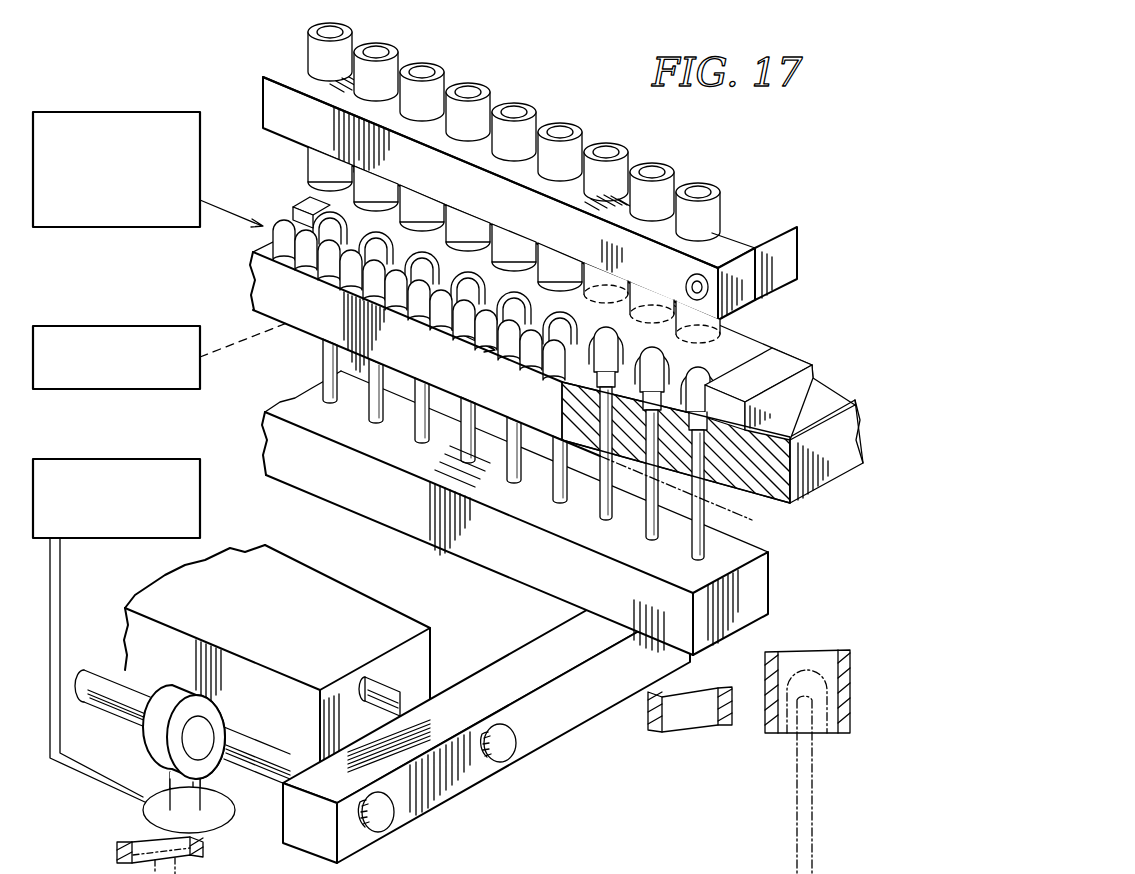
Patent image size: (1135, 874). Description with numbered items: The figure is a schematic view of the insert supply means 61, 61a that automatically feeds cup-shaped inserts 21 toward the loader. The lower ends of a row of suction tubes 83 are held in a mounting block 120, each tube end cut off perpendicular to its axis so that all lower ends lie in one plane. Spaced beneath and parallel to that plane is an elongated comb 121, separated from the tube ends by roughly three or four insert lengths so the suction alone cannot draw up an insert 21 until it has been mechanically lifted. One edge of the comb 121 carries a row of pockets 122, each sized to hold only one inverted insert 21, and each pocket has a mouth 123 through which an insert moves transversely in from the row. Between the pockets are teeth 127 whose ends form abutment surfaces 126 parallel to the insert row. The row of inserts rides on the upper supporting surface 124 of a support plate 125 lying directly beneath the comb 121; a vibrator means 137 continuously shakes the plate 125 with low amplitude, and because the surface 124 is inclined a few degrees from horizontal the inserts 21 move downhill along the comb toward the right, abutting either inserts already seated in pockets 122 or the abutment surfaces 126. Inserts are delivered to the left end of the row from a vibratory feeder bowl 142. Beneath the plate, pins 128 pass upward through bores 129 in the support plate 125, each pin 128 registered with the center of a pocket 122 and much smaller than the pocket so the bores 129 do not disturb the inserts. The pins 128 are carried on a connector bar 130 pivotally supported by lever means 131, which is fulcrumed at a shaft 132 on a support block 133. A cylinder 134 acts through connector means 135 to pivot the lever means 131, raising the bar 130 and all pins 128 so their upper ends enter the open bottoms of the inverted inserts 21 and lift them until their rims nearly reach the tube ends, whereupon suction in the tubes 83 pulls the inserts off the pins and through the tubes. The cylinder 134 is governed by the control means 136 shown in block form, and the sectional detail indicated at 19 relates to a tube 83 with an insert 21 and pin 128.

The section line for FIG. 19 is at (808, 640).
The insert 21 is at (340, 272).
The supply means 61 is at (235, 418).
The supply means 61a is at (578, 88).
The suction tube 83 is at (349, 45).
The mounting block 120 is at (764, 220).
The comb 121 is at (795, 351).
The pocket 122 is at (313, 207).
The mouth 123 is at (560, 386).
The supporting surface 124 is at (827, 397).
The support plate 125 is at (850, 417).
The abutment surface 126 is at (347, 230).
The tooth 127 is at (401, 249).
The pin 128 is at (326, 362).
The bore 129 is at (608, 383).
The connector bar 130 is at (516, 482).
The lever means 131 is at (527, 647).
The shaft 132 is at (413, 690).
The support block 133 is at (382, 612).
The cylinder 134 is at (143, 808).
The connector means 135 is at (236, 732).
The control means 136 is at (124, 443).
The vibrator means 137 is at (109, 326).
The vibratory feeder bowl 142 is at (153, 111).